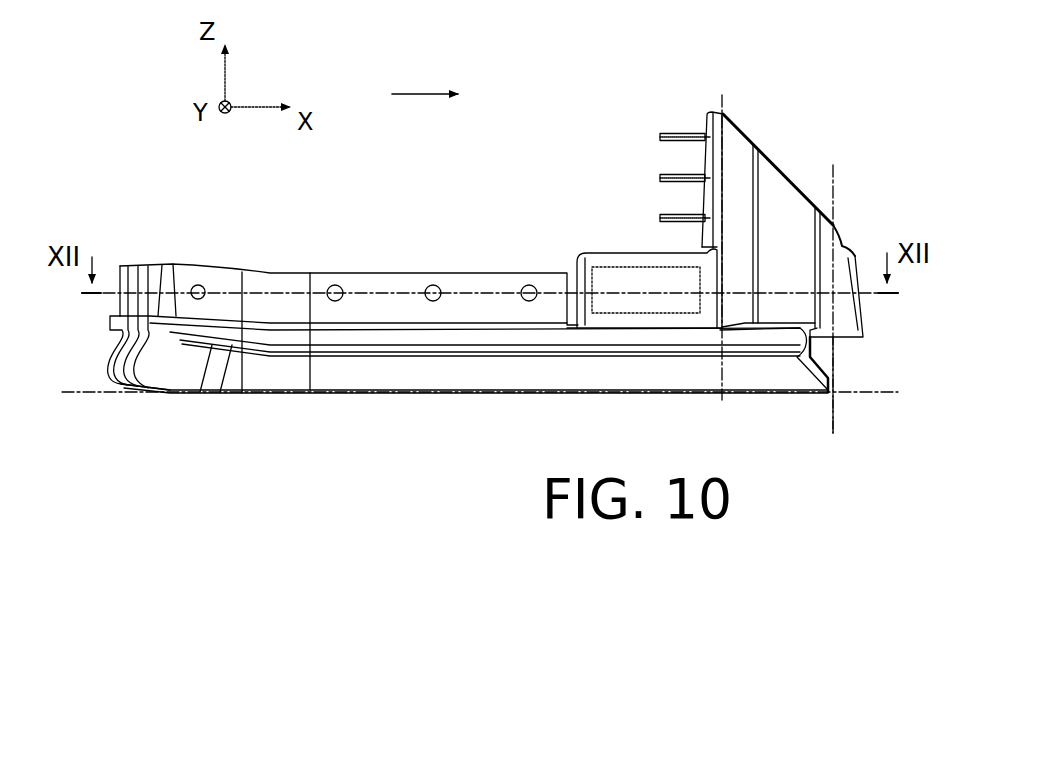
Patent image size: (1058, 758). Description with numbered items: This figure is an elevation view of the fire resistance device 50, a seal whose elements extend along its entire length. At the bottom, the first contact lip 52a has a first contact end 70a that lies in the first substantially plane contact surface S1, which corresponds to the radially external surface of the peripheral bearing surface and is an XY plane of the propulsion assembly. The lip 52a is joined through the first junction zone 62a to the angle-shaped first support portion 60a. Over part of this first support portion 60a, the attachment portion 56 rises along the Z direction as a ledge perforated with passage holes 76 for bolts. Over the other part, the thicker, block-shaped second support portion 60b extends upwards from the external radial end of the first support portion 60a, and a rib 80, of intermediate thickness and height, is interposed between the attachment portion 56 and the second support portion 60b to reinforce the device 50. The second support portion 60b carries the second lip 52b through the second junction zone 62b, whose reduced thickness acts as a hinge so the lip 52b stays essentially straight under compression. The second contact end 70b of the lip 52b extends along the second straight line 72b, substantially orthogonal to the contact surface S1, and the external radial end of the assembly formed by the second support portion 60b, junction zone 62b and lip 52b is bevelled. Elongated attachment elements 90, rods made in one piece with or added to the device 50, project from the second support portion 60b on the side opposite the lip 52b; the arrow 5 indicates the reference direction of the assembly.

The vehicle front direction 5 is at (420, 94).
The fire resistance device 50 is at (526, 253).
The first contact lip 52a is at (453, 373).
The second lip 52b is at (852, 320).
The attachment portion 56 is at (273, 288).
The first support portion 60a is at (217, 340).
The second support portion 60b is at (738, 147).
The first junction zone 62a is at (270, 352).
The second junction zone 62b is at (787, 197).
The first contact end 70a is at (358, 393).
The second contact end 70b is at (847, 253).
The second straight line 72b is at (833, 400).
The passage holes 76 is at (198, 285).
The rib 80 is at (617, 273).
The elongated attachment elements 90 is at (660, 218).
The first contact surface S1 is at (63, 394).